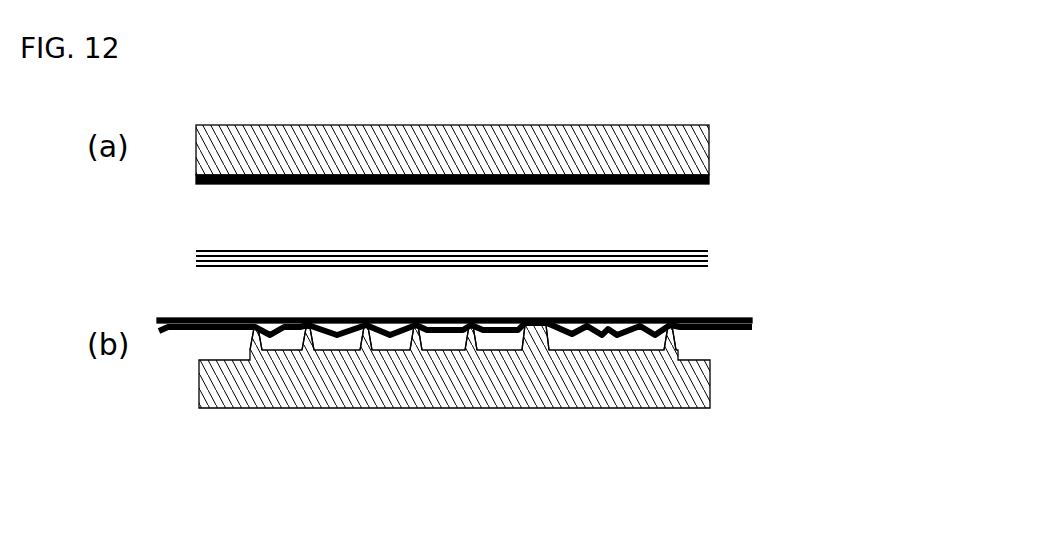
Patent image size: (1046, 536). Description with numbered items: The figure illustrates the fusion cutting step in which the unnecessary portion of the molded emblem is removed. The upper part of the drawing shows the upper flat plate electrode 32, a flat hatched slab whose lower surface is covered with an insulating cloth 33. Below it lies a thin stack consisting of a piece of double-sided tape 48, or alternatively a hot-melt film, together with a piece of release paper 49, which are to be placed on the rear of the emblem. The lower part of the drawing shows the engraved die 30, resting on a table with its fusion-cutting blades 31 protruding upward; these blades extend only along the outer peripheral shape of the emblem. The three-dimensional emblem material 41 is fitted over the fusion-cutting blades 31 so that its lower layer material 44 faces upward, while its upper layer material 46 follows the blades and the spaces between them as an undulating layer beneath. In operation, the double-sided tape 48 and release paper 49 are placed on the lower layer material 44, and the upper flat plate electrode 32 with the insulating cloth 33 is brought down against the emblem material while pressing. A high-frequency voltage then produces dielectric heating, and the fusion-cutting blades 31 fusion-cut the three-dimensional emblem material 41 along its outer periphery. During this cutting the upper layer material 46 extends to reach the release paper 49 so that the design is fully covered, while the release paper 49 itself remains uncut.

The engraved die 30 is at (672, 392).
The fusion-cutting blades 31 is at (678, 338).
The upper flat plate electrode 32 is at (698, 143).
The insulating cloth 33 is at (708, 182).
The three-dimensional emblem material 41 is at (533, 345).
The lower layer material 44 is at (752, 323).
The upper layer material 46 is at (752, 331).
The double-sided tape 48 is at (708, 262).
The release paper 49 is at (708, 252).